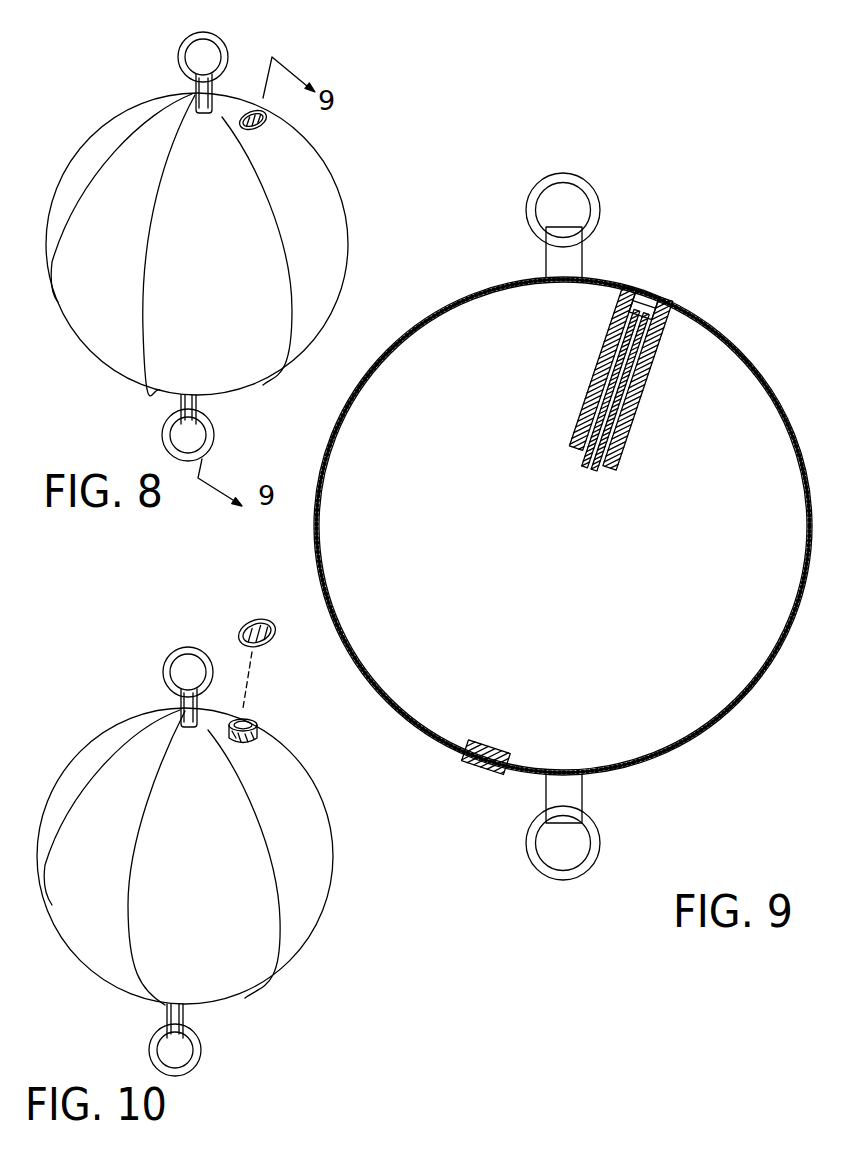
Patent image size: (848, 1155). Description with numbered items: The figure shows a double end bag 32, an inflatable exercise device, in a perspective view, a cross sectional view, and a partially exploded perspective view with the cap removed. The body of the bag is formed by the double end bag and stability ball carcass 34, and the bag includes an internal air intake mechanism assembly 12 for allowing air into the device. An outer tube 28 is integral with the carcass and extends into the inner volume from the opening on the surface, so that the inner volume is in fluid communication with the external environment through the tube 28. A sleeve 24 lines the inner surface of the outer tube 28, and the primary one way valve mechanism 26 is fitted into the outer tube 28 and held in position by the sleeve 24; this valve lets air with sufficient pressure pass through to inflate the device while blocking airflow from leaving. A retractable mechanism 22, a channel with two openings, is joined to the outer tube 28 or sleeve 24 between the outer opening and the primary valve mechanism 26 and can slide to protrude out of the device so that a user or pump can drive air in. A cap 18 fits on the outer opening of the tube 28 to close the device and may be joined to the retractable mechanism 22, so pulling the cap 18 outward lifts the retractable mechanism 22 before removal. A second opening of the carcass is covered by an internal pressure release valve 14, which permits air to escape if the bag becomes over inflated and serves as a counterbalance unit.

In FIG. 9, the internal mechanism assembly 12 is at (638, 496).
In FIG. 9, the internal pressure release valve 14 is at (493, 740).
In FIG. 8, the cap 18 is at (268, 125).
In FIG. 9, the cap 18 is at (645, 292).
In FIG. 10, the cap 18 is at (242, 638).
In FIG. 9, the retractable mechanism 22 is at (664, 300).
In FIG. 10, the retractable mechanism 22 is at (256, 723).
In FIG. 9, the sleeve 24 is at (600, 343).
In FIG. 9, the primary one way valve mechanism 26 is at (630, 400).
In FIG. 9, the outer tube 28 is at (575, 412).
In FIG. 8, the double end bag 32 is at (82, 45).
In FIG. 9, the double end bag 32 is at (720, 205).
In FIG. 10, the double end bag 32 is at (84, 668).
In FIG. 9, the double end bag and stability ball carcass 34 is at (482, 290).